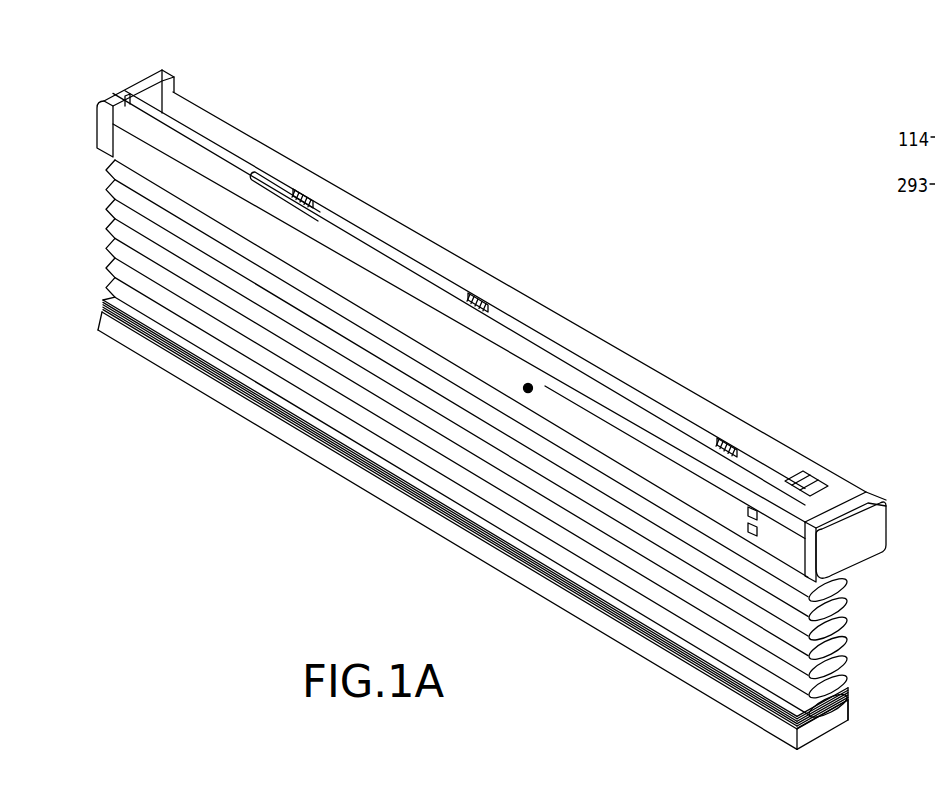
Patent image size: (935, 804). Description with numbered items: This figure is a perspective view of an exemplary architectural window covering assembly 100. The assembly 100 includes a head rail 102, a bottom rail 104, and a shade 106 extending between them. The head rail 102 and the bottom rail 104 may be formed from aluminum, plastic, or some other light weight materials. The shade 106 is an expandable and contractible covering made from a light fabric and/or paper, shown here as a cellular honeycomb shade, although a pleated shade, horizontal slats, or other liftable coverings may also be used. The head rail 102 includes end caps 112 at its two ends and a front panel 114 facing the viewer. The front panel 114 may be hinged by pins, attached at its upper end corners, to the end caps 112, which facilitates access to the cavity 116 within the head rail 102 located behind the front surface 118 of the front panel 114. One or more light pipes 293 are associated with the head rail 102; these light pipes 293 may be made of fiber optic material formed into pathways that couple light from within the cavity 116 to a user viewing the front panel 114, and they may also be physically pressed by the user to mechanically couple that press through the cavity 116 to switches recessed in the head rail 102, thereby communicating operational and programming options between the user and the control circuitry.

The architectural window covering assembly 100 is at (712, 152).
The head rail 102 is at (244, 100).
The bottom rail 104 is at (574, 622).
The shade 106 is at (272, 378).
The end caps 112 is at (145, 74).
The front panel 114 is at (528, 388).
The cavity 116 is at (255, 150).
The front surface 118 is at (326, 264).
The light pipes 293 is at (758, 498).